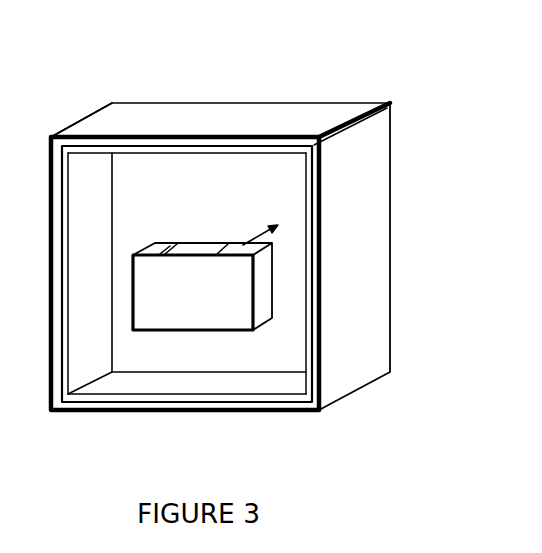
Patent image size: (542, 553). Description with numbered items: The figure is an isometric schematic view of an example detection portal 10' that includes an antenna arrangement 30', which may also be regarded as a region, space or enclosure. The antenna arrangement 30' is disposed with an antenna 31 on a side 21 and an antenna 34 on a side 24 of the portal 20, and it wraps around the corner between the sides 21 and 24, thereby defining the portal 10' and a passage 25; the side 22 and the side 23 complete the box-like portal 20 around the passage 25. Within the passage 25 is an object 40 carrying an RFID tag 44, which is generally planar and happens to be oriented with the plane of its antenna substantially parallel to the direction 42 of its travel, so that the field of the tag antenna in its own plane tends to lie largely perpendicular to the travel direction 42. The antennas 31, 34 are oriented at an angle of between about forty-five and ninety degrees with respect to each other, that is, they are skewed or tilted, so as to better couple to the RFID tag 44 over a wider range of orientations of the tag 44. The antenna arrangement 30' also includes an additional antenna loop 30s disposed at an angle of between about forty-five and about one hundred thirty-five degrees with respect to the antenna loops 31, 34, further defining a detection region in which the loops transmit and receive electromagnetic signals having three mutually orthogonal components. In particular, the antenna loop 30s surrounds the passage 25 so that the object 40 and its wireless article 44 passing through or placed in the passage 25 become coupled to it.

The detection portal 10' is at (307, 61).
The portal 20 is at (330, 408).
The side 21 is at (242, 152).
The right side wall 22 is at (315, 210).
The bottom wall 23 is at (168, 410).
The side 24 is at (104, 218).
The passage 25 is at (283, 197).
The antenna arrangement 30' is at (80, 117).
The antenna loop 30s is at (192, 145).
The antenna 31 is at (153, 112).
The antenna 34 is at (52, 230).
The object 40 is at (177, 332).
The direction of travel 42 is at (257, 236).
The RFID tag 44 is at (188, 248).